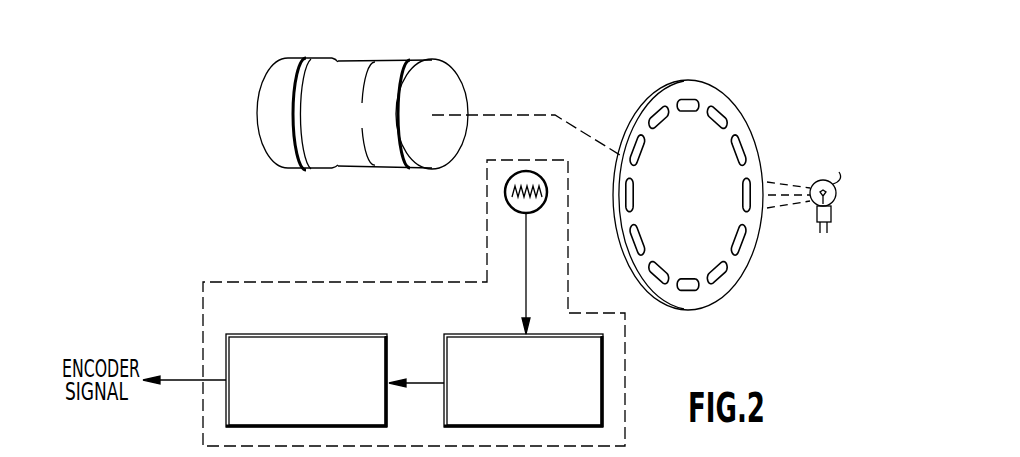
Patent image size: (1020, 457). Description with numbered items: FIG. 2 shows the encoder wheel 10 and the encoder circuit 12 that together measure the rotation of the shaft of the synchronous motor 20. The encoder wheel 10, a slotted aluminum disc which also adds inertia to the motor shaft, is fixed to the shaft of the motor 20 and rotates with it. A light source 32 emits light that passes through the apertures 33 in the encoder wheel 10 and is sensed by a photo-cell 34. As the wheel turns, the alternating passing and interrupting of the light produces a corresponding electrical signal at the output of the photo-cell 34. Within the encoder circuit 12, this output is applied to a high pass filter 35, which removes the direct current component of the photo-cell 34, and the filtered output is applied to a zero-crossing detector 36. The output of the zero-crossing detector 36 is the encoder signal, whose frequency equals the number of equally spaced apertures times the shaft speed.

The encoder wheel 10 is at (688, 169).
The encoder circuit 12 is at (368, 275).
The synchronous motor 20 is at (438, 72).
The light source 32 is at (834, 204).
The apertures 33 is at (720, 122).
The photo-cell 34 is at (508, 212).
The high pass filter 35 is at (484, 334).
The zero-crossing detector 36 is at (272, 334).